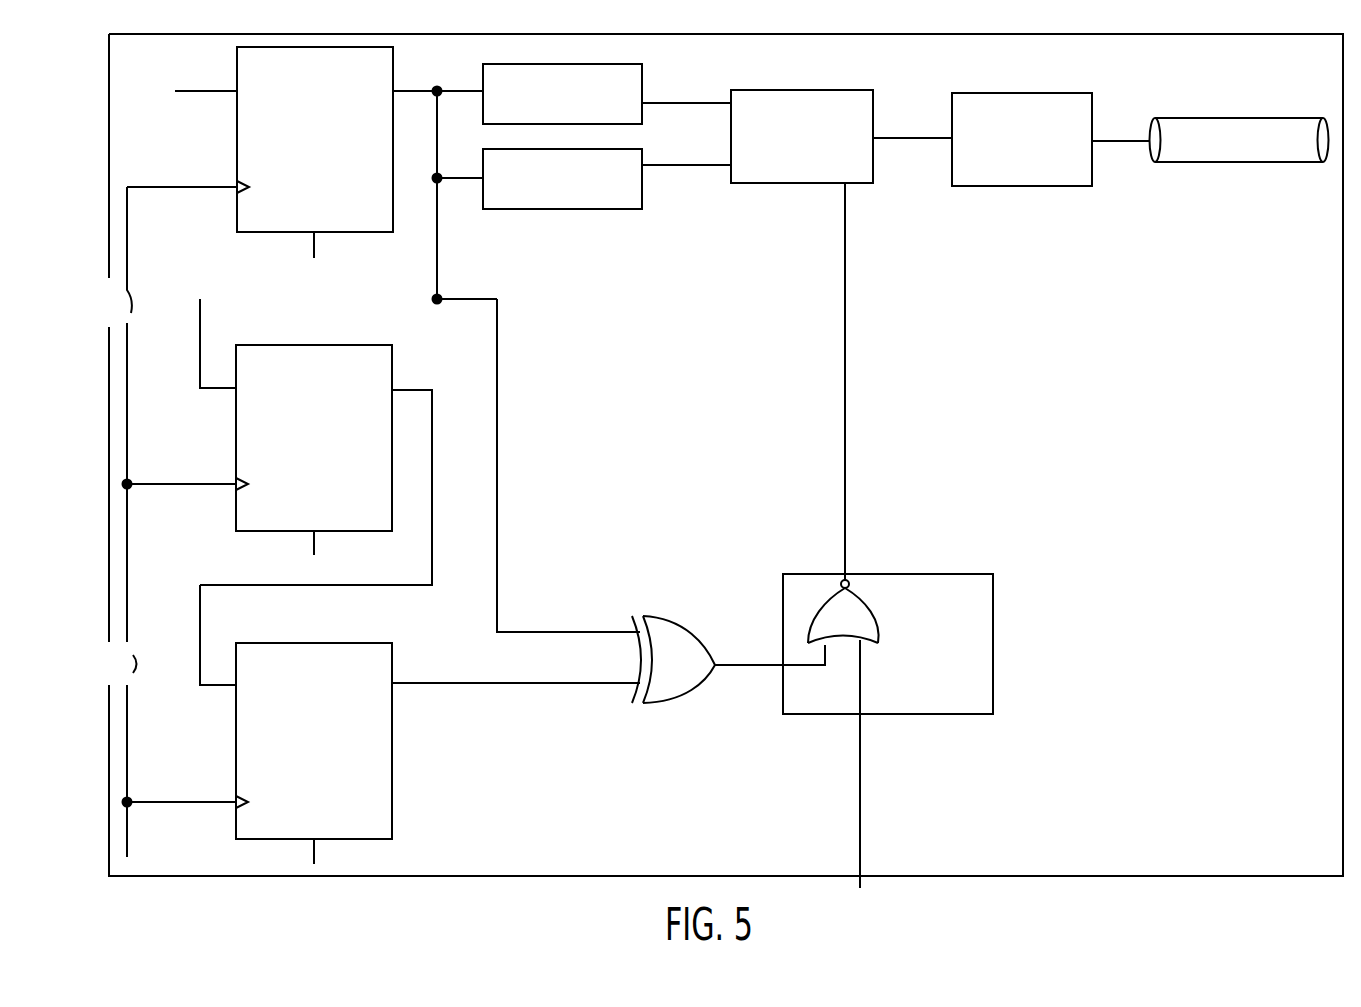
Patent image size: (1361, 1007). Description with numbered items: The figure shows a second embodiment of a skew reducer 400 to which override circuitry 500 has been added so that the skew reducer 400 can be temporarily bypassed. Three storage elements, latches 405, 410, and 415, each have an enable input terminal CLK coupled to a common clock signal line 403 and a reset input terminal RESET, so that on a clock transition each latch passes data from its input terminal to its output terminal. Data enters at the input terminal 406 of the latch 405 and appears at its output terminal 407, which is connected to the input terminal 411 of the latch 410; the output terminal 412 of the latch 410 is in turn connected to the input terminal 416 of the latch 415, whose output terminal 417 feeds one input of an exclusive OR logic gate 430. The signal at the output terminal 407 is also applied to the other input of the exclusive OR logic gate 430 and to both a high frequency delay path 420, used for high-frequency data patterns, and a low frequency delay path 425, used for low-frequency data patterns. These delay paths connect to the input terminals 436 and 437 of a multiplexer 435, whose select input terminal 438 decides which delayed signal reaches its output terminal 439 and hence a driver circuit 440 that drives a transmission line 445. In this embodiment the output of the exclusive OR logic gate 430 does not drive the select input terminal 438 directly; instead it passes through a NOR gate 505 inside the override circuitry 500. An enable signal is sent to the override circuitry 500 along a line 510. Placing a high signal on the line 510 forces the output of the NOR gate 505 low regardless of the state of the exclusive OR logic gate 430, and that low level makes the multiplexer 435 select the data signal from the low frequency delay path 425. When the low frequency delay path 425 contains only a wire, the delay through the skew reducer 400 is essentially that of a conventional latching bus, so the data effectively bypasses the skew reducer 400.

The skew reducer 400 is at (726, 455).
The clock signal line 403 is at (127, 207).
The latch 405 is at (315, 152).
The input terminal 406 is at (206, 86).
The output terminal 407 is at (404, 90).
The latch 410 is at (314, 450).
The input terminal 411 is at (221, 390).
The output terminal 412 is at (400, 390).
The latch 415 is at (314, 753).
The input terminal 416 is at (221, 687).
The output terminal 417 is at (418, 660).
The high frequency delay path 420 is at (562, 97).
The low frequency delay path 425 is at (562, 182).
The exclusive OR logic gate 430 is at (661, 501).
The multiplexer 435 is at (802, 136).
The input terminal 436 is at (664, 103).
The input terminal 437 is at (664, 165).
The select input terminal 438 is at (845, 238).
The output terminal 439 is at (888, 138).
The driver circuit 440 is at (1051, 139).
The transmission line 445 is at (1239, 142).
The override circuitry 500 is at (888, 645).
The NOR gate 505 is at (843, 611).
The line 510 is at (860, 795).